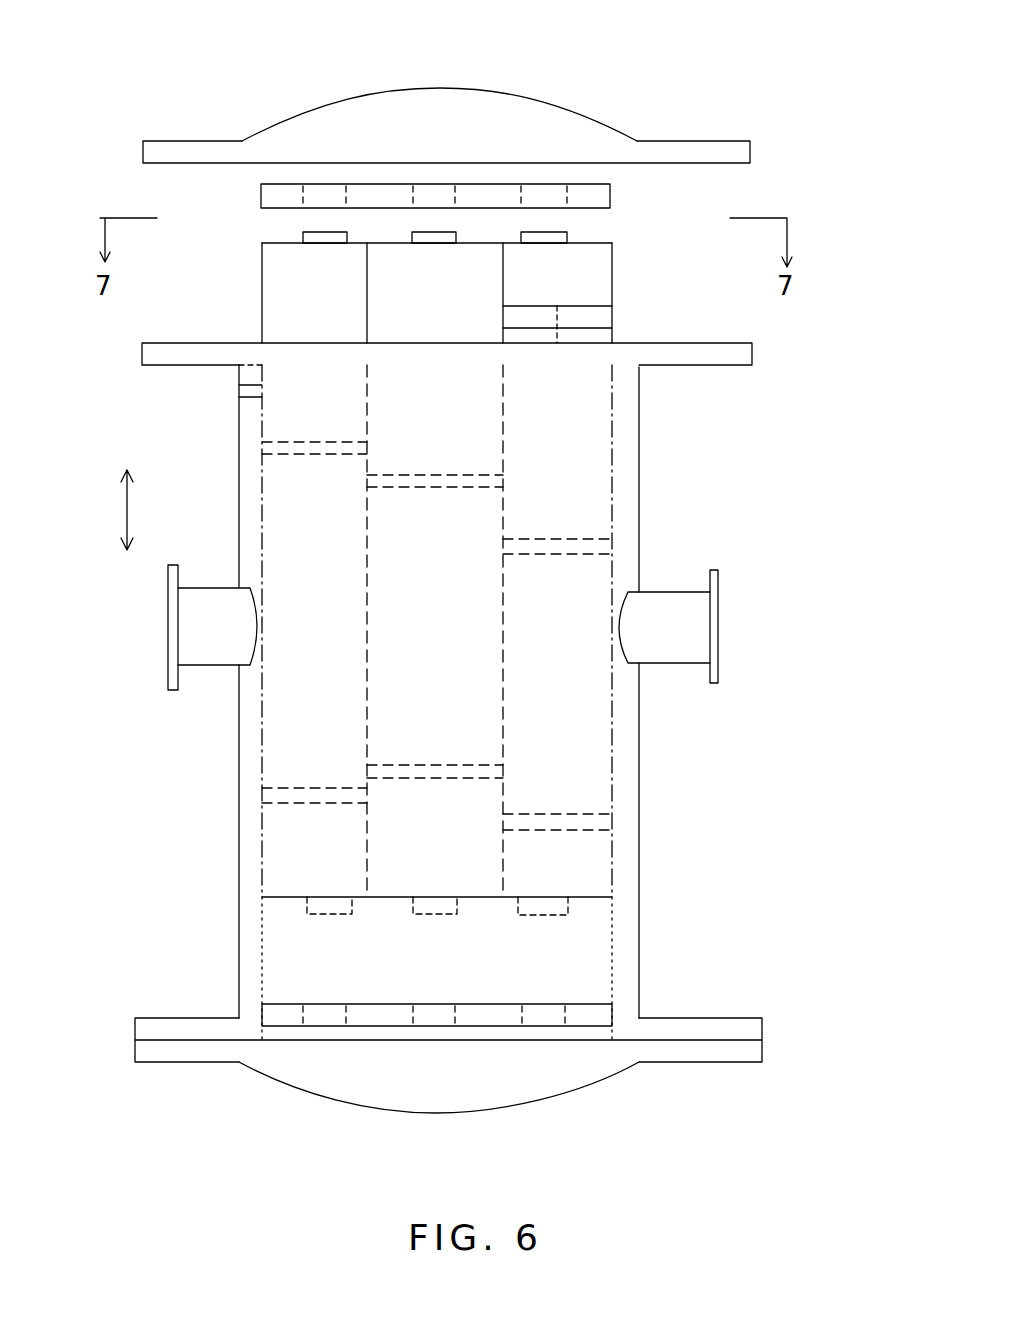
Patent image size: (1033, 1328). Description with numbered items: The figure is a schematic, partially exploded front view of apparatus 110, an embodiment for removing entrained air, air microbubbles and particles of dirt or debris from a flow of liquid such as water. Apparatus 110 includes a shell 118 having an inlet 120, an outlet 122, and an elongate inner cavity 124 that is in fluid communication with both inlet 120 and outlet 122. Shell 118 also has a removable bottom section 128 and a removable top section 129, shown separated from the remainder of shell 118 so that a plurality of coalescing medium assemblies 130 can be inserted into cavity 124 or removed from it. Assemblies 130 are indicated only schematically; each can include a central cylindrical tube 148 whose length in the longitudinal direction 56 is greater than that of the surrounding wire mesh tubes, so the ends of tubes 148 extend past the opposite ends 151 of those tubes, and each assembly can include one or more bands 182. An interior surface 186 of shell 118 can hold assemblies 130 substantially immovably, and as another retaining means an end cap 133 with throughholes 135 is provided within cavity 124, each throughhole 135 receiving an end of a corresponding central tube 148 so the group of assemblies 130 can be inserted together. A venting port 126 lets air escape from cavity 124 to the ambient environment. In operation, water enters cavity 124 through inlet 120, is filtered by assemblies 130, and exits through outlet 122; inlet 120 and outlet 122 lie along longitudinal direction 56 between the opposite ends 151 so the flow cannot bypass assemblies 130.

The apparatus 110 is at (724, 65).
The removable top section 129 is at (480, 143).
The end cap 133 is at (600, 197).
The throughholes 135 is at (423, 192).
The central cylindrical tube 148 is at (541, 243).
The opposite ends 151 is at (277, 243).
The band 182 is at (452, 480).
The shell 118 is at (631, 434).
The venting port 126 is at (248, 397).
The longitudinal direction 56 is at (125, 510).
The coalescing medium assemblies 130 is at (350, 563).
The elongate inner cavity 124 is at (578, 963).
The interior surface 186 is at (263, 952).
The inlet 120 is at (222, 643).
The outlet 122 is at (670, 647).
The removable bottom section 128 is at (465, 1093).